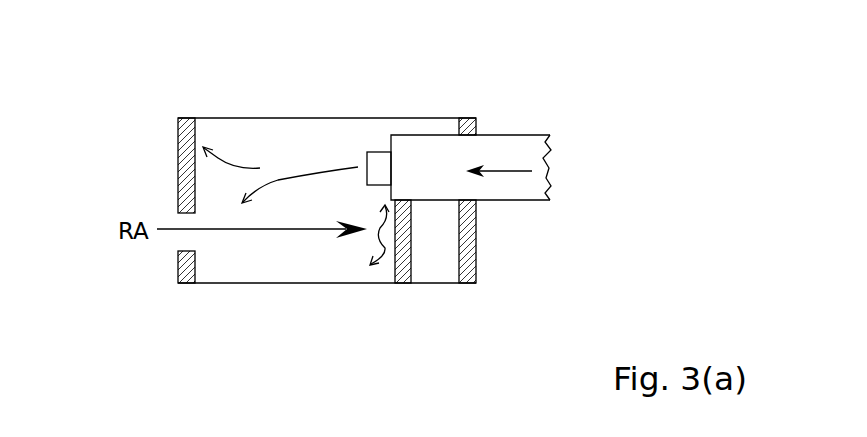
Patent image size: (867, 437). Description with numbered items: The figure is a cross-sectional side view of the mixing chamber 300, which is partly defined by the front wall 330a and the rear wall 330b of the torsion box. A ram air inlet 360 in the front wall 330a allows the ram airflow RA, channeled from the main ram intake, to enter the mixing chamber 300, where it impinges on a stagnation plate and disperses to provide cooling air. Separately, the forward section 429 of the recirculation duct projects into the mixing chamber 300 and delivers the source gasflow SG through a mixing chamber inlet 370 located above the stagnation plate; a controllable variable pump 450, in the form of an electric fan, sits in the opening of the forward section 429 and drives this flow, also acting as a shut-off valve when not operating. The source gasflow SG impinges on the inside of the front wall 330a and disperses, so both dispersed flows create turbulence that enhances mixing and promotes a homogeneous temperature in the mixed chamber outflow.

The mixing chamber 300 is at (278, 112).
The front wall 330a is at (178, 167).
The rear wall 330b is at (476, 246).
The ram air inlet 360 is at (183, 243).
The mixing chamber inlet 370 is at (366, 152).
The controllable variable pump 450 is at (382, 152).
The forward section 429 is at (520, 135).